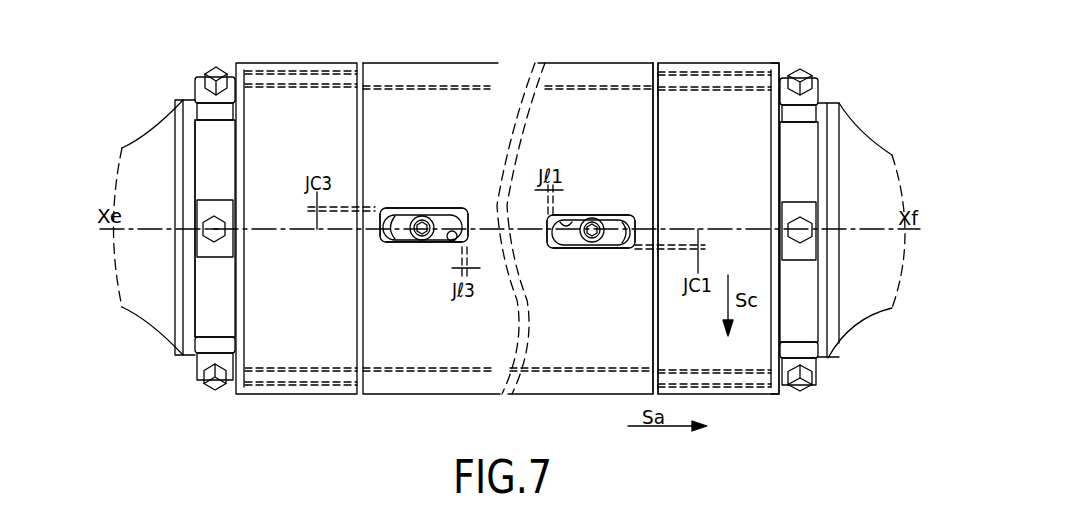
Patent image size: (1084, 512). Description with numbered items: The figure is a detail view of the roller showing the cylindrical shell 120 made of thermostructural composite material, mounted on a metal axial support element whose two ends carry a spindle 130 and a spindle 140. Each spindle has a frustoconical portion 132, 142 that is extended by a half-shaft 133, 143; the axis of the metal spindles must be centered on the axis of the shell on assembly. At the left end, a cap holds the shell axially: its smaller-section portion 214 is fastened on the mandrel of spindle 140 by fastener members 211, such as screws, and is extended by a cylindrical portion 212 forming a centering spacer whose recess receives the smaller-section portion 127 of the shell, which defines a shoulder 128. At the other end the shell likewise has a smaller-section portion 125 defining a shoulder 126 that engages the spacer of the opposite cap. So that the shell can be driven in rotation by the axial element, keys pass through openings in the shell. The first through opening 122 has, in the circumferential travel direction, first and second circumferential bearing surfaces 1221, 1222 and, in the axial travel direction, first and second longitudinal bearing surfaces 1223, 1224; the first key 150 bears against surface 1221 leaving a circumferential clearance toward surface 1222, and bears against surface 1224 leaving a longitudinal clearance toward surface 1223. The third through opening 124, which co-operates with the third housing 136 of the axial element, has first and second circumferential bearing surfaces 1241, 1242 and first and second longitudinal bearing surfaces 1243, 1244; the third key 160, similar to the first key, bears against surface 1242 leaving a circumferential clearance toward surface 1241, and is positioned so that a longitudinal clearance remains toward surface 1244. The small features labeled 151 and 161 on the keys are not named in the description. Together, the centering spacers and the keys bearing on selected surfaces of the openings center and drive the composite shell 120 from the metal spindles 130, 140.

The cylindrical shell 120 is at (582, 63).
The first through opening 122 is at (588, 249).
The third through opening 124 is at (427, 208).
The smaller-section portion 125 is at (722, 90).
The shoulder 126 is at (658, 72).
The smaller-section portion 127 is at (298, 82).
The shoulder 128 is at (357, 63).
The spindle 130 is at (842, 109).
The frustoconical portion 132 is at (858, 135).
The half-shaft 133 is at (873, 172).
The third housing 136 is at (747, 63).
The spindle 140 is at (157, 322).
The frustoconical portion 142 is at (165, 127).
The half-shaft 143 is at (130, 166).
The first key 150 is at (566, 222).
The screw head 151 is at (607, 222).
The third key 160 is at (445, 233).
The screw head 161 is at (404, 244).
The fastener members 211 is at (205, 70).
The cylindrical portion 212 is at (272, 63).
The smaller-section portion 214 is at (218, 280).
The first circumferential bearing surface 1221 is at (572, 213).
The second circumferential bearing surface 1222 is at (612, 249).
The first longitudinal bearing surface 1223 is at (552, 249).
The second longitudinal bearing surface 1224 is at (630, 222).
The first circumferential bearing surface 1241 is at (403, 209).
The second circumferential bearing surface 1242 is at (443, 247).
The first longitudinal bearing surface 1243 is at (382, 234).
The second longitudinal bearing surface 1244 is at (462, 210).